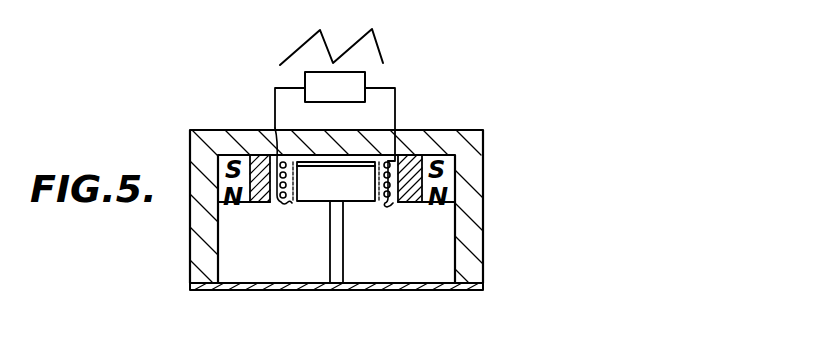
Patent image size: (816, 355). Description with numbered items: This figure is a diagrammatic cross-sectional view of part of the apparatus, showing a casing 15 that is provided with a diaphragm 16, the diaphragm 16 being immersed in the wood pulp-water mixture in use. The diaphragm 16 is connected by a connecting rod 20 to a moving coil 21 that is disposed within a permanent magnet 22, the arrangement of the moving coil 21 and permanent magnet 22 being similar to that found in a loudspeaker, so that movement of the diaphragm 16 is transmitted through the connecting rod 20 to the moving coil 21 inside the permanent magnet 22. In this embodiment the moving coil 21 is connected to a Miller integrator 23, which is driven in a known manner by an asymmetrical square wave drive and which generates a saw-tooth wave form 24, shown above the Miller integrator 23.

The casing 15 is at (475, 236).
The diaphragm 16 is at (393, 287).
The connecting rod 20 is at (338, 242).
The moving coil 21 is at (275, 128).
The permanent magnet 22 is at (412, 153).
The Miller integrator 23 is at (357, 78).
The saw-tooth wave form 24 is at (387, 43).